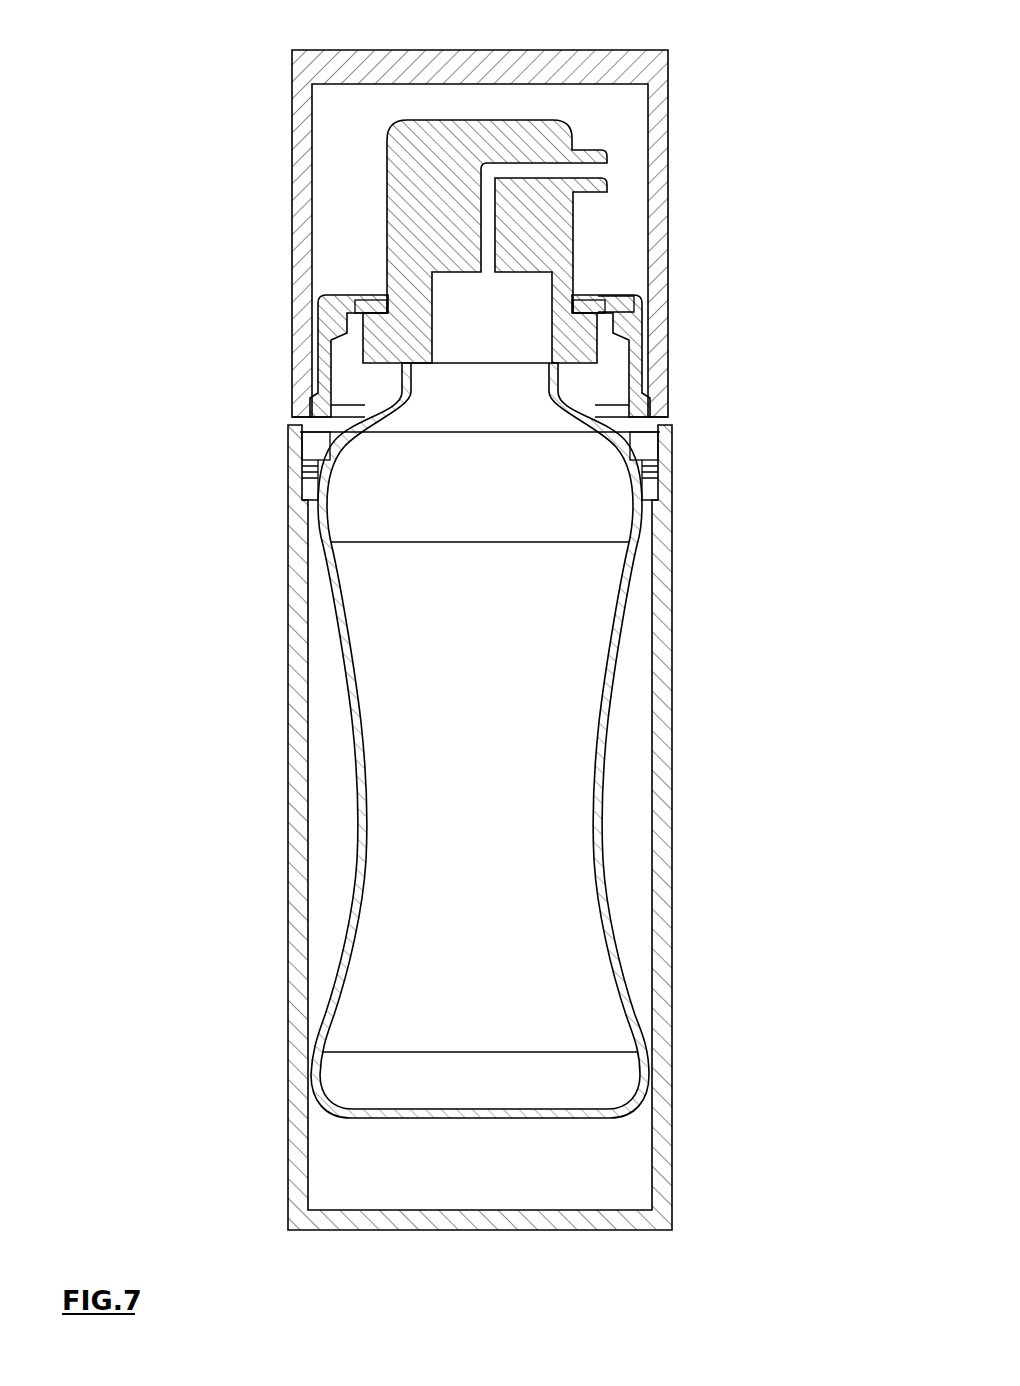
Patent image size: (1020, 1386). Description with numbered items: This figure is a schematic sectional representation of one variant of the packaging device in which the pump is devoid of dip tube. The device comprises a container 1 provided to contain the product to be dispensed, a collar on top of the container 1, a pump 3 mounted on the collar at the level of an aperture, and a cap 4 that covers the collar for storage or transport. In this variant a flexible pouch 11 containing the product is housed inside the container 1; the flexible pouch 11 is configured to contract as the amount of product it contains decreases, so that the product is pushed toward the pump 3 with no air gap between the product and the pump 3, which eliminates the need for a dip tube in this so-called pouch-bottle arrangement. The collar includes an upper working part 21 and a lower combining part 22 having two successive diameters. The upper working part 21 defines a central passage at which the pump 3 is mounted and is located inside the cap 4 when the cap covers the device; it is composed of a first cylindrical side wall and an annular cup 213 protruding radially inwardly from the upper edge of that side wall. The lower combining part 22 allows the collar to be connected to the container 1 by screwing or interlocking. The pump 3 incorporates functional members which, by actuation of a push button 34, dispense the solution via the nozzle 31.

The container 1 is at (302, 690).
The flexible pouch 11 is at (360, 832).
The upper working part 21 is at (258, 285).
The lower combining part 22 is at (258, 512).
The annular cup 213 is at (598, 292).
The pump 3 is at (624, 181).
The nozzle 31 is at (582, 153).
The push button 34 is at (513, 120).
The cap 4 is at (300, 212).